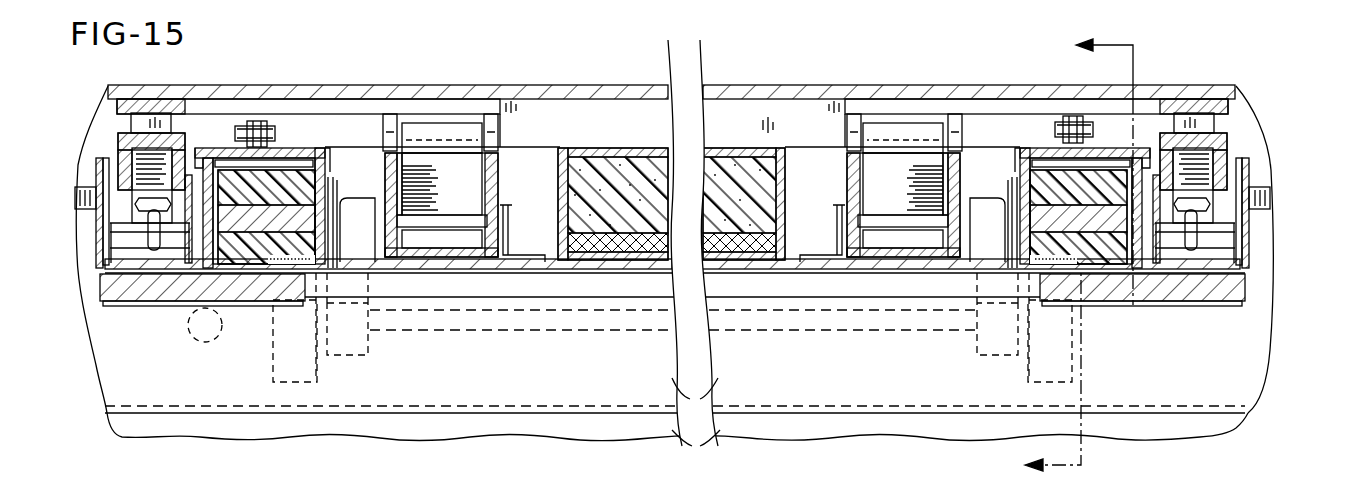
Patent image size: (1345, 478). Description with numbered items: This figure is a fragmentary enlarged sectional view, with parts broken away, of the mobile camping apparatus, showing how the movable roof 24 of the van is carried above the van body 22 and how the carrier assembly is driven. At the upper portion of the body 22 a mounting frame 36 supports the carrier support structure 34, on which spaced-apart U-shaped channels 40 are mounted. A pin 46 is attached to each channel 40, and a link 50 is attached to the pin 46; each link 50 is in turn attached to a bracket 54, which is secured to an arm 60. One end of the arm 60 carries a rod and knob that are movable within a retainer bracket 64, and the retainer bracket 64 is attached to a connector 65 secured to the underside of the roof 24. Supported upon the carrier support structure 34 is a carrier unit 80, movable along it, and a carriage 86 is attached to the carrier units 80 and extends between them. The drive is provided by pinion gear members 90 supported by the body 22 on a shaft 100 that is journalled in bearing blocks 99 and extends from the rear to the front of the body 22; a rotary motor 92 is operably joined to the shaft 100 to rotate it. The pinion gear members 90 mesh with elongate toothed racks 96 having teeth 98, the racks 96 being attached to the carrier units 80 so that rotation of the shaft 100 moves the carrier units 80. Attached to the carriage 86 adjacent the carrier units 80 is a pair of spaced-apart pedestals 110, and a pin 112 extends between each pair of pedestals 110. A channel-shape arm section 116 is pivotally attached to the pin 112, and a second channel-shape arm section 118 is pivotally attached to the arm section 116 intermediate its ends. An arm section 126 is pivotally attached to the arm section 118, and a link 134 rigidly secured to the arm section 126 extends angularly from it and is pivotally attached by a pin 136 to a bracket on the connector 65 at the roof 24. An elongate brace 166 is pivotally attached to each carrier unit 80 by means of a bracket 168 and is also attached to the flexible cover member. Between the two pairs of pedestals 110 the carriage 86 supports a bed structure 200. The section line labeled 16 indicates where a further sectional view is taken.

The section line 16- 16 is at (1063, 252).
The body 22 is at (696, 426).
The roof 24 is at (720, 86).
The carrier support structure 34 is at (100, 251).
The mounting frame 36 is at (100, 277).
The U-shaped channel 40 is at (113, 214).
The pin 46 is at (130, 227).
The link 50 is at (157, 252).
The bracket 54 is at (143, 157).
The arm 60 is at (148, 143).
The retainer bracket 64 is at (165, 115).
The connector 65 is at (241, 100).
The carrier unit 80 is at (693, 265).
The carriage 86 is at (328, 172).
The pinion gear member 90 is at (267, 378).
The rotary motor 92 is at (197, 344).
The toothed rack 96 is at (308, 221).
The teeth 98 is at (310, 253).
The bearing block 99 is at (370, 349).
The shaft 100 is at (606, 337).
The pedestal 110 is at (379, 207).
The pin 112 is at (674, 196).
The channel-shape arm section 116 is at (503, 196).
The channel-shape arm section 118 is at (494, 168).
The arm section 126 is at (407, 178).
The link 134 is at (460, 170).
The pin 136 is at (463, 140).
The elongate brace 166 is at (255, 124).
The bracket 168 is at (265, 130).
The bed structure 200 is at (657, 166).